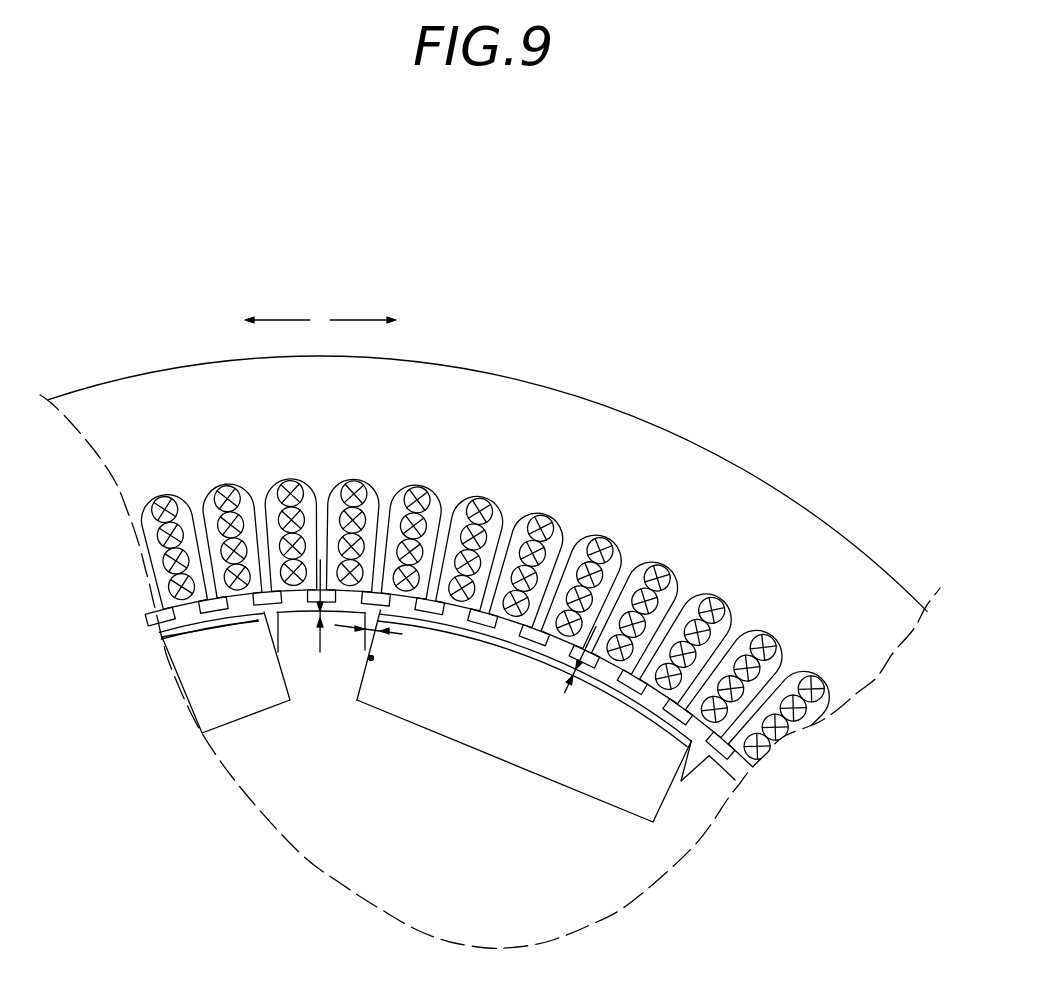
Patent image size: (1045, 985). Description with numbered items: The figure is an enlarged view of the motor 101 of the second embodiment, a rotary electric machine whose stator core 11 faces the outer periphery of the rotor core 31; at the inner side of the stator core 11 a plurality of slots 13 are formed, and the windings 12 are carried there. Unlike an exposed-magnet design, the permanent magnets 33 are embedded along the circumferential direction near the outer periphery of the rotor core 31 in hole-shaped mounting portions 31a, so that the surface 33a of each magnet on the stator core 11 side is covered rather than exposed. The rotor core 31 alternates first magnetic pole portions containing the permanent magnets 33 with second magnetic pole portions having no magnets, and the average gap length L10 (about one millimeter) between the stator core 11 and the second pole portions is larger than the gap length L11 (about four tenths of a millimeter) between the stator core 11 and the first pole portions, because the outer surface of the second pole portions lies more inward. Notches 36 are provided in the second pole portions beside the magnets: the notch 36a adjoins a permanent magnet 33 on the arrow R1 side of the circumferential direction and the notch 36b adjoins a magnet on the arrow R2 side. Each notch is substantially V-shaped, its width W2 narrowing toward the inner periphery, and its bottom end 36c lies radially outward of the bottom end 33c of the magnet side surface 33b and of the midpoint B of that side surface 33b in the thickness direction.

The motor 101 is at (618, 394).
The stator core 11 is at (553, 400).
The windings 12 is at (598, 550).
The slots 13 is at (665, 580).
The rotor core 31 is at (350, 852).
The mounting portions 31a is at (447, 733).
The permanent magnets 33 is at (532, 755).
The surface of the permanent magnet on the stator core side 33a is at (538, 650).
The side surface of the permanent magnet 33b is at (357, 672).
The bottom end of the side surface 33c is at (356, 668).
The notches 36 is at (314, 536).
The notch 36a is at (275, 645).
The notch 36b is at (371, 640).
The bottom end of the notch 36c is at (363, 650).
The gap length L10 is at (317, 617).
The gap length L11 is at (580, 672).
The flux barrier width W2 is at (379, 652).
The point B is at (374, 661).
The arrow R1 is at (277, 307).
The arrow R2 is at (363, 307).